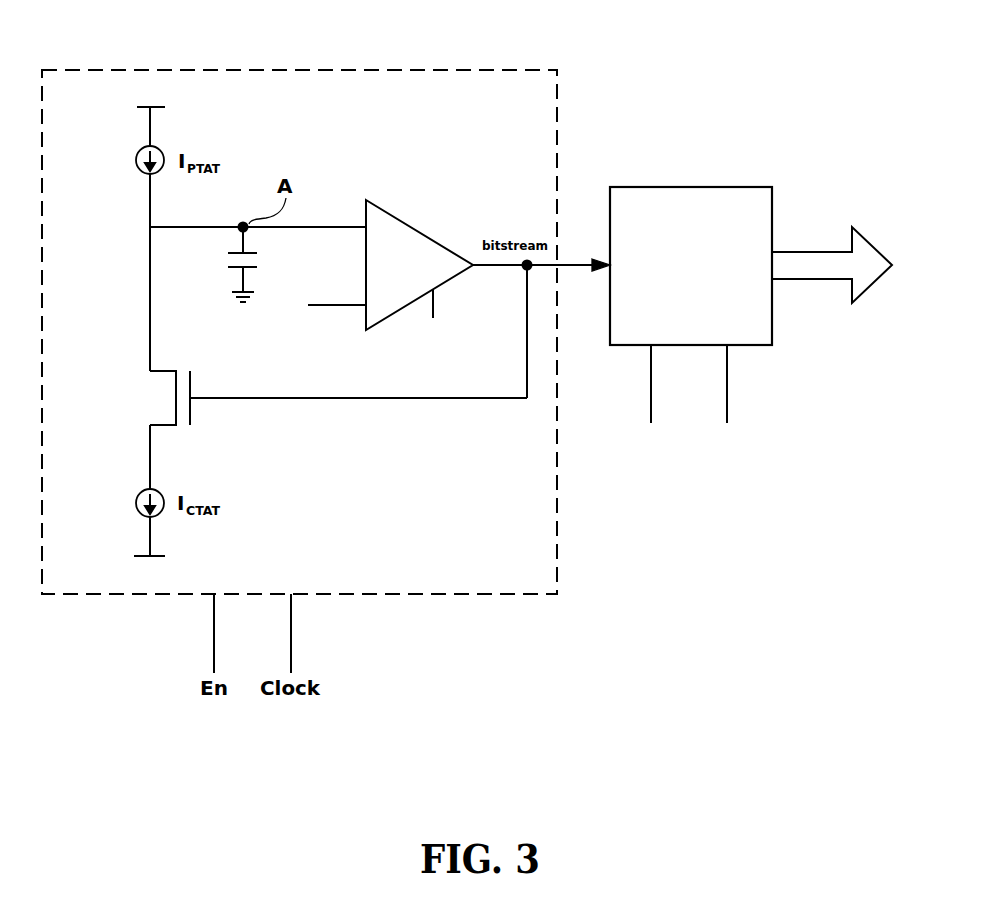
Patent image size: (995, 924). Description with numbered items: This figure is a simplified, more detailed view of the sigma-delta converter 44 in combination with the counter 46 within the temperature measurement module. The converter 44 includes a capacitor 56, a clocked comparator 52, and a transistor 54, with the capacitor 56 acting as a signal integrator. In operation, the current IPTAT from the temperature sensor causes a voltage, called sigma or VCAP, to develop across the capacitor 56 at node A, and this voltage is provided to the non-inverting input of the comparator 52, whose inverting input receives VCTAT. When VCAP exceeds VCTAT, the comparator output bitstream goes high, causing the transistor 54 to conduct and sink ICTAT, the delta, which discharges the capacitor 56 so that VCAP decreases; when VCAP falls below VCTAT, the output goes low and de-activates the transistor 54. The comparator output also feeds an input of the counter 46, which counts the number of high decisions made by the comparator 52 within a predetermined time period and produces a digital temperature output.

The sigma-delta converter 44 is at (338, 70).
The counter 46 is at (692, 187).
The clocked comparator 52 is at (407, 222).
The transistor 54 is at (136, 396).
The capacitor 56 is at (210, 267).